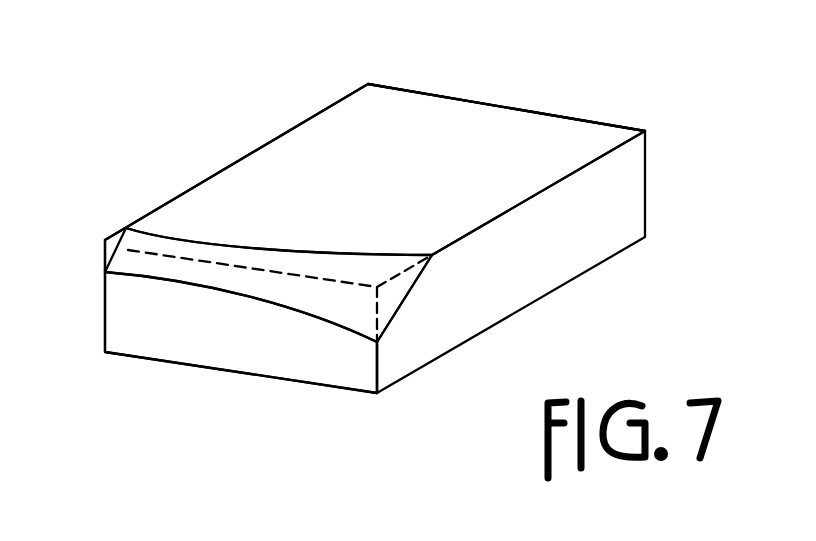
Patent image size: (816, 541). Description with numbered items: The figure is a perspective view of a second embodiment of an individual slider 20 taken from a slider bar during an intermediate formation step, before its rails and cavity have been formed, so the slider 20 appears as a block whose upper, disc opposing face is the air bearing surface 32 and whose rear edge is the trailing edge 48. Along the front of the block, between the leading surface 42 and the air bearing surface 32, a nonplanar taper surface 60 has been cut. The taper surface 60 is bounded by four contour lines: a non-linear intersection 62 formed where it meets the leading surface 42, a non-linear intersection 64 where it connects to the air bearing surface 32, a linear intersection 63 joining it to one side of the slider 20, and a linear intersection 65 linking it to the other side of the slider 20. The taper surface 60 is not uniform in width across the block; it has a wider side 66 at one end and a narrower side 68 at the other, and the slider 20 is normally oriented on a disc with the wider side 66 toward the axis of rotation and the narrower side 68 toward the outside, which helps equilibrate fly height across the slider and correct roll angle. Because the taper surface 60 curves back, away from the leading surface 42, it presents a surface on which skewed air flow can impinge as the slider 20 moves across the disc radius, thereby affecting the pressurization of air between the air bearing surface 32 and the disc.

The slider 20 is at (532, 77).
The air bearing surface 32 is at (562, 148).
The trailing edge 48 is at (597, 123).
The leading surface 42 is at (233, 352).
The taper surface 60 is at (305, 287).
The non-linear intersection 62 is at (173, 280).
The non-linear intersection 64 is at (240, 248).
The linear intersection 63 is at (127, 232).
The linear intersection 65 is at (407, 293).
The wider side 66 is at (360, 305).
The narrower side 68 is at (130, 258).